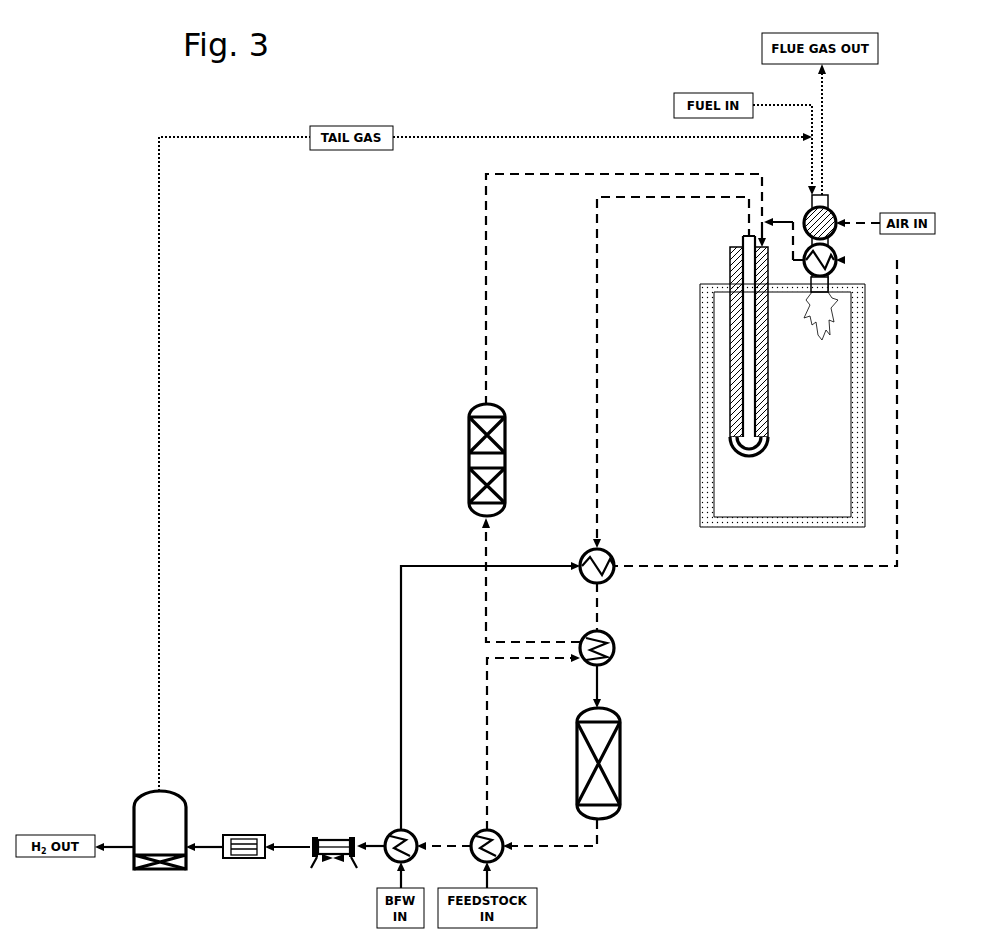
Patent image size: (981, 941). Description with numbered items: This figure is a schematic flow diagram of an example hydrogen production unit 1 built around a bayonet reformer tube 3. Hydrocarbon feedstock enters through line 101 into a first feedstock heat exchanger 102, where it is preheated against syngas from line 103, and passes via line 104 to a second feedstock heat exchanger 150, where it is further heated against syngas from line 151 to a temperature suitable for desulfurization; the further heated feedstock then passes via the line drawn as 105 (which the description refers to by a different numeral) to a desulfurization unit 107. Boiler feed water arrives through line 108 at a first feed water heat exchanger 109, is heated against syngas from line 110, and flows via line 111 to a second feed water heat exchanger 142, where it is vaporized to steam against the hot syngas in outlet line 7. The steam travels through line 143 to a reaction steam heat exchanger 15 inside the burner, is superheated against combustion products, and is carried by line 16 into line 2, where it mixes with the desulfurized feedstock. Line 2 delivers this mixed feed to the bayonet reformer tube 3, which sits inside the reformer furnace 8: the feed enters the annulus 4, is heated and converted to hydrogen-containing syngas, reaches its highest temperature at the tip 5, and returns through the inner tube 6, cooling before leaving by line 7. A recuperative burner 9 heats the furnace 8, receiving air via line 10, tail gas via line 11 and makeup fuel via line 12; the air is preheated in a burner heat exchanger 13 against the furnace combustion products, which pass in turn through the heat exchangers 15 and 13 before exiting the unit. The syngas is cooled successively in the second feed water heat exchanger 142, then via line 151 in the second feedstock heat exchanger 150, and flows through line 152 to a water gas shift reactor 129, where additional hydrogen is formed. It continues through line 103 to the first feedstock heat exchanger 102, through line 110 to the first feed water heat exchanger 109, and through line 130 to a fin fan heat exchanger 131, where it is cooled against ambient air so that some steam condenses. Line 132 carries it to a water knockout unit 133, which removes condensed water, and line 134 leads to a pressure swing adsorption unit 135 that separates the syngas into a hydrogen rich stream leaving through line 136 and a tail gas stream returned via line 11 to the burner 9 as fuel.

The hydrogen production unit 1 is at (549, 85).
The line 2 is at (486, 290).
The bayonet reformer tube 3 is at (712, 352).
The annulus 4 is at (738, 320).
The tip 5 is at (740, 450).
The inner tube 6 is at (750, 357).
The outlet line 7 is at (597, 393).
The reformer furnace 8 is at (737, 495).
The recuperative burner 9 is at (832, 284).
The line 10 is at (855, 222).
The line 11 is at (468, 137).
The line 12 is at (810, 158).
The burner heat exchanger 13 is at (832, 208).
The reaction steam heat exchanger 15 is at (836, 250).
The line 16 is at (793, 217).
The line 101 is at (483, 879).
The first feedstock heat exchanger 102 is at (484, 830).
The line 103 is at (530, 848).
The line 104 is at (487, 683).
The heated feedstock line to desulfurizer 105 is at (487, 630).
The desulfurization unit 107 is at (469, 432).
The line 108 is at (395, 877).
The first feed water heat exchanger 109 is at (397, 833).
The line 110 is at (465, 843).
The line 111 is at (400, 727).
The water gas shift reactor 129 is at (622, 750).
The line 130 is at (372, 848).
The fin fan heat exchanger 131 is at (323, 863).
The line 132 is at (279, 849).
The water knockout unit 133 is at (226, 858).
The line 134 is at (202, 849).
The pressure swing adsorption unit 135 is at (175, 870).
The line 136 is at (118, 848).
The second feed water heat exchanger 142 is at (590, 548).
The line 143 is at (680, 563).
The second feedstock heat exchanger 150 is at (613, 640).
The line 151 is at (595, 593).
The line 152 is at (598, 683).